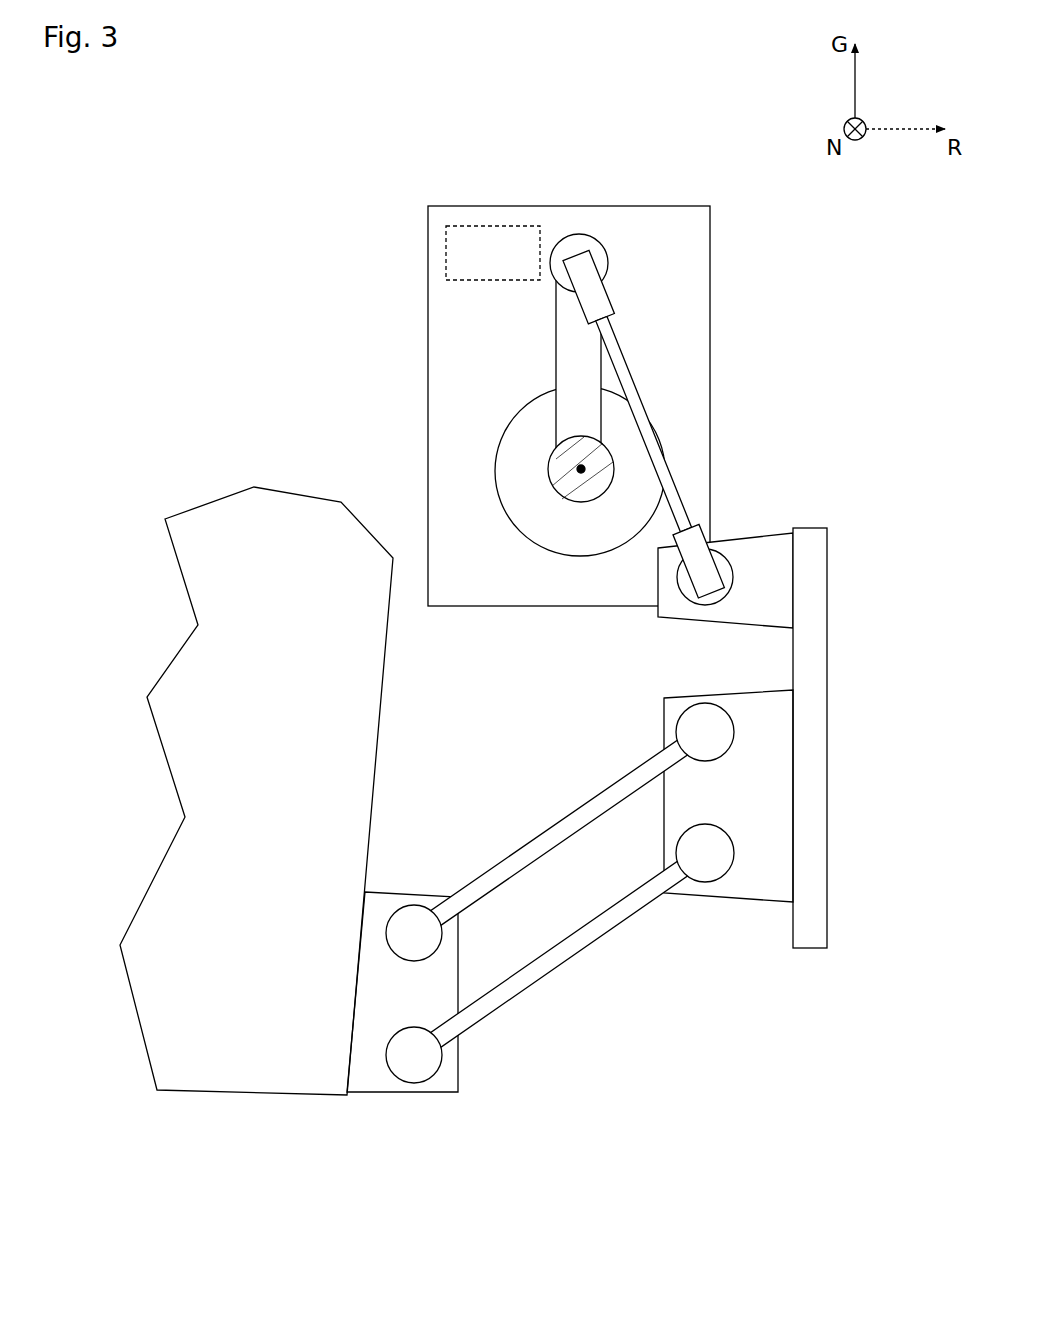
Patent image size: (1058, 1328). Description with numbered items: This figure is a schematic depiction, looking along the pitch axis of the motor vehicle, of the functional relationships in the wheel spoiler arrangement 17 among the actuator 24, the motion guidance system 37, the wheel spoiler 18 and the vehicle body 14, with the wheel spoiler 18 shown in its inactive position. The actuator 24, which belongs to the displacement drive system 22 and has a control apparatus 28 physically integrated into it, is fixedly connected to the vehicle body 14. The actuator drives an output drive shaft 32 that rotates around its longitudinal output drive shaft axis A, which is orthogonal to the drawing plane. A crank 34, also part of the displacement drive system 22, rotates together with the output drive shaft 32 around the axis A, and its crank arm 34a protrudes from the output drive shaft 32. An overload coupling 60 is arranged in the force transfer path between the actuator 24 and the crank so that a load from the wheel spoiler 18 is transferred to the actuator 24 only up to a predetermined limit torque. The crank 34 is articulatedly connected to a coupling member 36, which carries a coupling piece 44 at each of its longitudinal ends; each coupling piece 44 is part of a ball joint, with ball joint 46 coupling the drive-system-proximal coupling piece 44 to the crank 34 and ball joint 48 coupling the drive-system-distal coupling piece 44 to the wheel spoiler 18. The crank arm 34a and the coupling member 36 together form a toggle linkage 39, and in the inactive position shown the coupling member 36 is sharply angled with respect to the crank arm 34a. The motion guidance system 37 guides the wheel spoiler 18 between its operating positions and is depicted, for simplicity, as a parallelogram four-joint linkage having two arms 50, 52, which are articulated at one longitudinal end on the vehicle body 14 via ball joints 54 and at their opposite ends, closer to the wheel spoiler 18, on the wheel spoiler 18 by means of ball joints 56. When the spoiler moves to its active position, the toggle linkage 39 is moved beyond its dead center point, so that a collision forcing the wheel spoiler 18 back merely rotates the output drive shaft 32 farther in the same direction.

The vehicle body 14 is at (256, 791).
The wheel spoiler arrangement 17 is at (187, 357).
The wheel spoiler 18 is at (745, 738).
The displacement drive system 22 is at (395, 385).
The actuator 24 is at (428, 332).
The control apparatus 28 is at (493, 253).
The output drive shaft 32 is at (568, 452).
The crank 34 is at (523, 365).
The crank arm 34a is at (566, 350).
The coupling member 36 is at (691, 398).
The motion guidance system 37 is at (540, 935).
The toggle linkage 39 is at (577, 225).
The coupling piece 44 is at (600, 297).
The ball joint 46 is at (596, 250).
The ball joint 48 is at (727, 575).
The arm 50 is at (608, 922).
The arm 52 is at (543, 848).
The ball joints 54 is at (414, 994).
The ball joints 56 is at (705, 792).
The overload coupling 60 is at (507, 453).
The longitudinal output drive shaft axis A is at (581, 469).